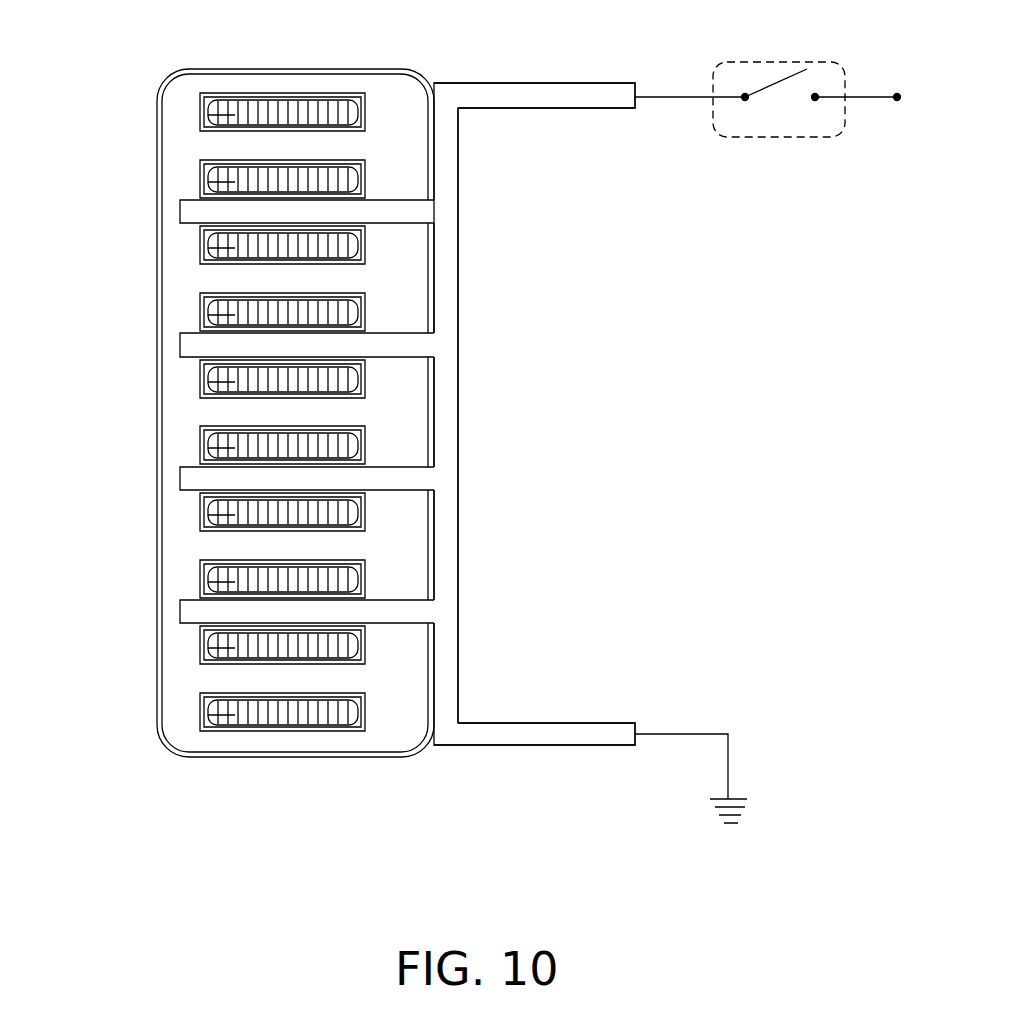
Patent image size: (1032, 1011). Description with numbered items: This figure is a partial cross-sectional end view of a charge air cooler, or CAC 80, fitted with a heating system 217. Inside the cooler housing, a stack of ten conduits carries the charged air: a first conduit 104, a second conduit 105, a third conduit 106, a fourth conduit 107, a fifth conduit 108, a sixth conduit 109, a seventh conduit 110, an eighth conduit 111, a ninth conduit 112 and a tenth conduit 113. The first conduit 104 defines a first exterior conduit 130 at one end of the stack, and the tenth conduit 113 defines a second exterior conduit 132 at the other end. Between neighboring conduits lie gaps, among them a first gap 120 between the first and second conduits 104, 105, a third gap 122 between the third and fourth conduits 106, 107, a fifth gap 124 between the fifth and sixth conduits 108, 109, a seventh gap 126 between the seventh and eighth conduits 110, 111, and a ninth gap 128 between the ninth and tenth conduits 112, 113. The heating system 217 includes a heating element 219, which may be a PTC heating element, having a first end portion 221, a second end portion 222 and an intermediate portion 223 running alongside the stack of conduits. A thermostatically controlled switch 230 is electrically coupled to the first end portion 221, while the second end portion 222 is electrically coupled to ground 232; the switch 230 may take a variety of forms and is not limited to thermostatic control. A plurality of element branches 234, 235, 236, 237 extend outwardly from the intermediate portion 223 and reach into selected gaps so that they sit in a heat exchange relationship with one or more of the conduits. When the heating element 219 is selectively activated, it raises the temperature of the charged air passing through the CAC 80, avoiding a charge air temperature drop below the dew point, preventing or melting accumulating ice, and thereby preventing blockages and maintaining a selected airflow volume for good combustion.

The charge air cooler 80 is at (170, 815).
The first conduit 104 is at (207, 115).
The second conduit 105 is at (207, 182).
The third conduit 106 is at (207, 248).
The fourth conduit 107 is at (207, 315).
The fifth conduit 108 is at (207, 382).
The sixth conduit 109 is at (207, 448).
The seventh conduit 110 is at (207, 515).
The eighth conduit 111 is at (207, 582).
The ninth conduit 112 is at (207, 648).
The tenth conduit 113 is at (207, 715).
The first gap 120 is at (210, 147).
The third gap 122 is at (210, 280).
The fifth gap 124 is at (210, 413).
The seventh gap 126 is at (210, 547).
The ninth gap 128 is at (210, 680).
The first exterior conduit 130 is at (254, 93).
The second exterior conduit 132 is at (260, 733).
The heating system 217 is at (567, 410).
The heating element 219 is at (458, 382).
The first end portion 221 is at (455, 83).
The second end portion 222 is at (547, 746).
The intermediate portion 223 is at (458, 262).
The thermostatically controlled switch 230 is at (813, 185).
The ground 232 is at (698, 838).
The element branch 234 is at (400, 211).
The element branch 235 is at (400, 345).
The element branch 236 is at (400, 478).
The element branch 237 is at (400, 610).